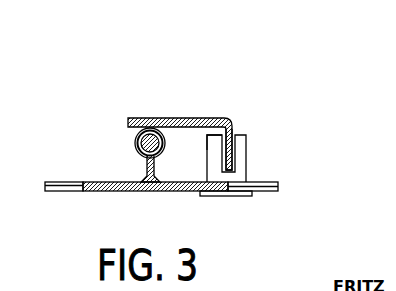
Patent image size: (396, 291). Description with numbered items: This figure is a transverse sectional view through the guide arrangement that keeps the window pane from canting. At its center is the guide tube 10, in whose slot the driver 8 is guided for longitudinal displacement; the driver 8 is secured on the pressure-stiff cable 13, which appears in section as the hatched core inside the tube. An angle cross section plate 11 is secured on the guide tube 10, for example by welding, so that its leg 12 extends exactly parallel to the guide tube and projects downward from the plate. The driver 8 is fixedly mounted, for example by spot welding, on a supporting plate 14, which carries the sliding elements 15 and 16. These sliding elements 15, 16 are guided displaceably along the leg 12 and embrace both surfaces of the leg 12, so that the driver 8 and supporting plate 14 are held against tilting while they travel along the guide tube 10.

The driver 8 is at (147, 163).
The guide tube 10 is at (135, 143).
The angle cross section plate 11 is at (193, 118).
The leg 12 is at (233, 128).
The pin 13 is at (140, 139).
The supporting plate 14 is at (102, 192).
The sliding element 15 is at (214, 142).
The sliding element 16 is at (246, 158).